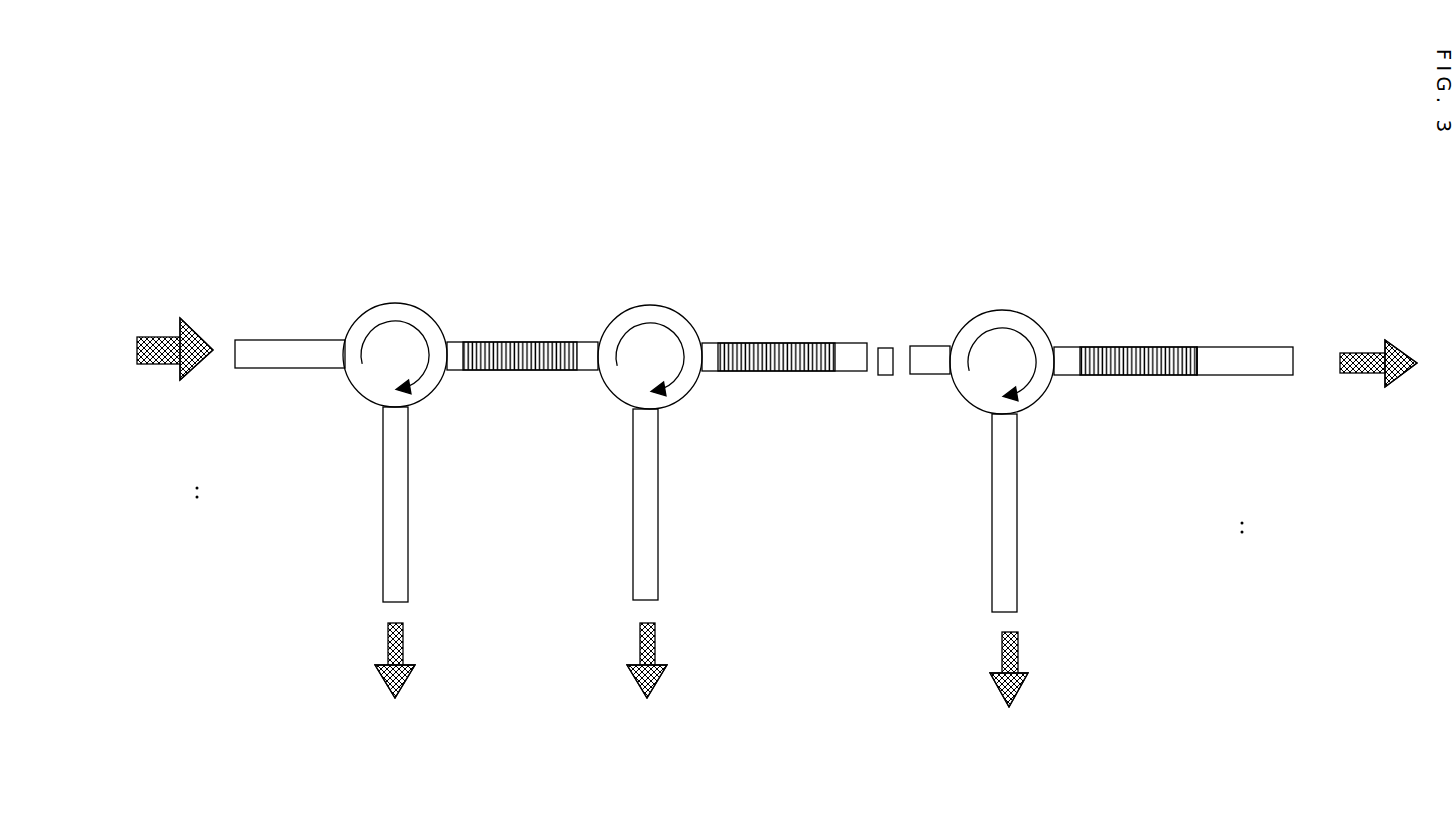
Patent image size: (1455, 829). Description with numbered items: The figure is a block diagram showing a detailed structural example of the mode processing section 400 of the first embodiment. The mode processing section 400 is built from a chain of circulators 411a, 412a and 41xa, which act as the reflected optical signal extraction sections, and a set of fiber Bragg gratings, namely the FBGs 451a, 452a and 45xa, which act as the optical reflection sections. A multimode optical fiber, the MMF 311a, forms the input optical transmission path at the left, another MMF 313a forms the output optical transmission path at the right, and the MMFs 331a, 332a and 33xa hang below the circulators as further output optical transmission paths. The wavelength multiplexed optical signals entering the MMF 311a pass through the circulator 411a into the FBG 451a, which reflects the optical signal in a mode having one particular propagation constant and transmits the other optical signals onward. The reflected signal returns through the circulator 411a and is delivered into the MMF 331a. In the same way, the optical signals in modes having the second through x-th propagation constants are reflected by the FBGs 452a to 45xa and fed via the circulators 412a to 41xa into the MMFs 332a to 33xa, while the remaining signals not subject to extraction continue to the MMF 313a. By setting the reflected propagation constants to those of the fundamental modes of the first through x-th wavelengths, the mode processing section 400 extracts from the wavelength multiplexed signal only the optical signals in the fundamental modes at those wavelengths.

The mode processing section 400 is at (1002, 235).
The MMF (multimode optical fiber) 311a is at (245, 338).
The circulator 411a is at (390, 302).
The FBG (fiber Bragg grating) 451a is at (503, 340).
The circulator 412a is at (643, 307).
The FBG (fiber Bragg grating) 452a is at (753, 342).
The circulator 41xa is at (1000, 312).
The FBG (fiber Bragg grating) 45xa is at (1125, 348).
The MMF (multimode optical fiber) 313a is at (1268, 348).
The MMF (multimode optical fiber) 331a is at (408, 560).
The MMF (multimode optical fiber) 332a is at (658, 563).
The MMF (multimode optical fiber) 33xa is at (1017, 573).